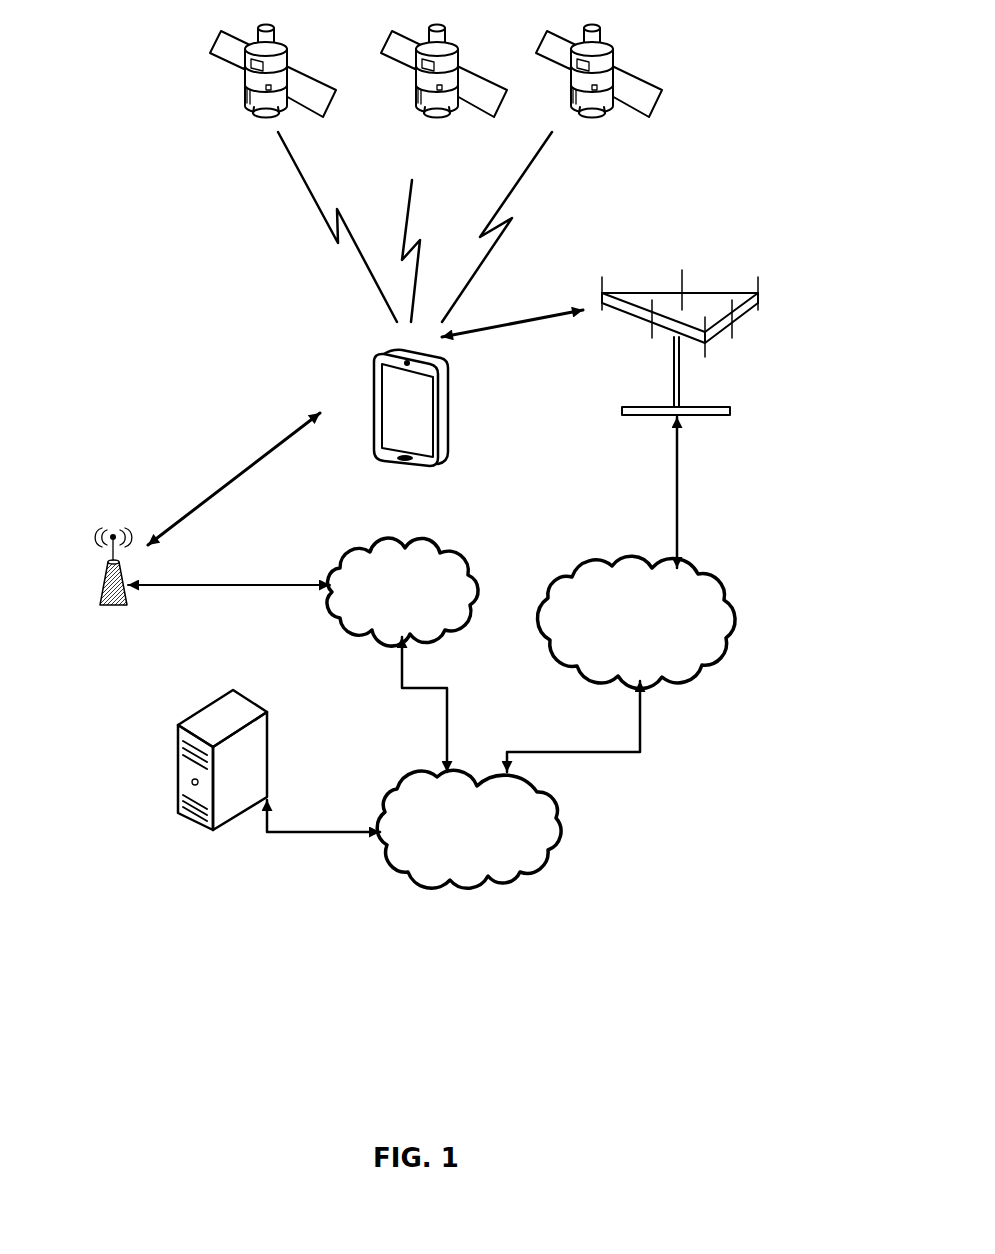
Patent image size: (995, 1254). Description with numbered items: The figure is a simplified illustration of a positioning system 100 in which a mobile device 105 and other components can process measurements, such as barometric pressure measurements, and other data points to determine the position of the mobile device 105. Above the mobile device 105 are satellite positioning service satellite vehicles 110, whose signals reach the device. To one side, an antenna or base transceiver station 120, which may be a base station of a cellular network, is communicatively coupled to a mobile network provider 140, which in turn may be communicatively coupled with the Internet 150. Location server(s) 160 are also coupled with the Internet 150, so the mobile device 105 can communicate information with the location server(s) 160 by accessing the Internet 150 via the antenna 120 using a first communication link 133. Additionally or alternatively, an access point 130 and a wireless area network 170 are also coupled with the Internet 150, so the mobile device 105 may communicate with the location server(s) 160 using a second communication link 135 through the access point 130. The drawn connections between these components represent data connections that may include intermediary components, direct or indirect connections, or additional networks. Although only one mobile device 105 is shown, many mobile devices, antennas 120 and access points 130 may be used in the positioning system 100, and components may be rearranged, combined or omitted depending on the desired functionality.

The positioning system 100 is at (130, 1006).
The mobile device 105 is at (382, 357).
The satellite positioning service (SPS) satellite vehicles 110 is at (194, 80).
The base transceiver station 120 is at (703, 415).
The access point 130 is at (122, 604).
The first communication link 133 is at (503, 330).
The second communication link 135 is at (237, 480).
The mobile network provider 140 is at (717, 587).
The Internet 150 is at (560, 837).
The location server 160 is at (247, 703).
The wireless area network (WAN) 170 is at (472, 618).